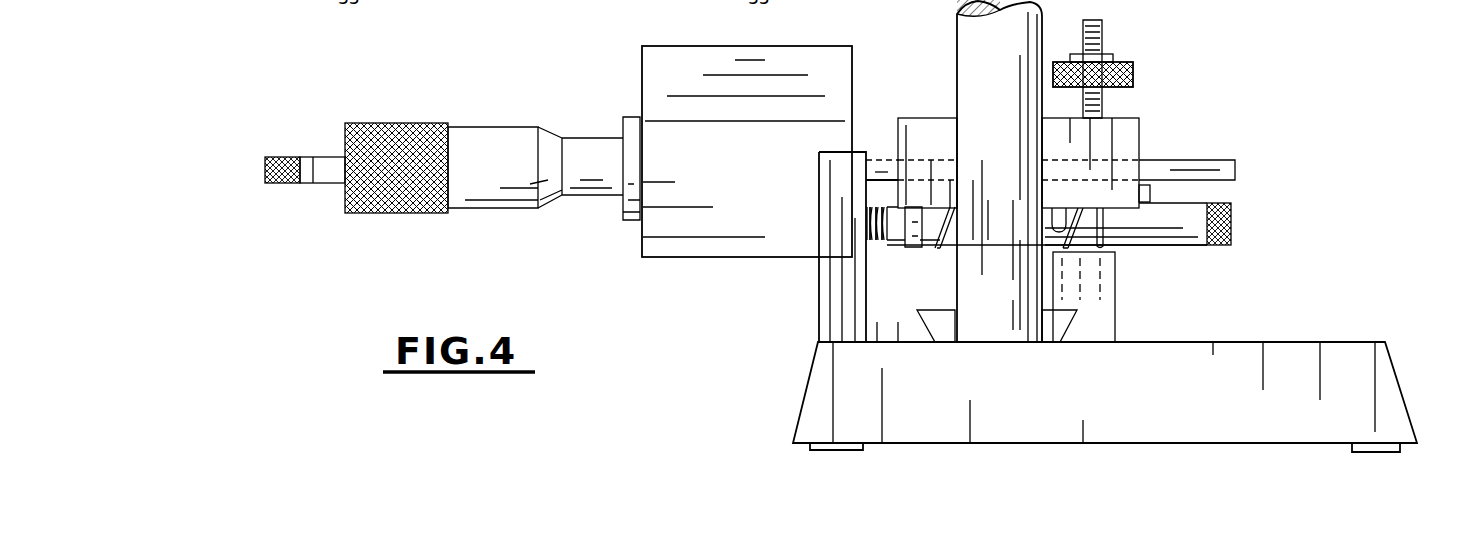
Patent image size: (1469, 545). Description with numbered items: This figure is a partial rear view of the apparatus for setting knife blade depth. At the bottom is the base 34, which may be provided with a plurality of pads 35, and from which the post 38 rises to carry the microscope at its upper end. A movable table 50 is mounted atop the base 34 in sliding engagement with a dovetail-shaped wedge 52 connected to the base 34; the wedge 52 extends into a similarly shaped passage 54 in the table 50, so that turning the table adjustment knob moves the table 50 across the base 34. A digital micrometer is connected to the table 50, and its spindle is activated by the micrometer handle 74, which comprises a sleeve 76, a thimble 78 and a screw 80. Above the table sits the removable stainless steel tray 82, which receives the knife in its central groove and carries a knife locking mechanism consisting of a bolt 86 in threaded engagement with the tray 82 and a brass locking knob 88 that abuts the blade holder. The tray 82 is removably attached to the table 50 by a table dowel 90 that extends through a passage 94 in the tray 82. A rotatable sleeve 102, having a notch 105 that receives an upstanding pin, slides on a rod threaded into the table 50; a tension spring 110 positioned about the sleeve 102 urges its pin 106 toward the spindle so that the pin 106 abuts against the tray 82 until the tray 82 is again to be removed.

The micrometer handle 74 is at (478, 112).
The screw 80 is at (280, 186).
The thimble 78 is at (503, 210).
The sleeve 76 is at (586, 198).
The tray 82 is at (935, 146).
The post 38 is at (995, 67).
The bolt 86 is at (1102, 34).
The locking knob 88 is at (1133, 70).
The passage 94 is at (1138, 166).
The table dowel 90 is at (1216, 164).
The pin 106 is at (1150, 193).
The notch 105 is at (1065, 214).
The tension spring 110 is at (1102, 236).
The rotatable sleeve 102 is at (1183, 240).
The table 50 is at (872, 308).
The passage 54 is at (1063, 312).
The wedge 52 is at (1050, 338).
The base 34 is at (1210, 388).
The pads 35 is at (863, 452).